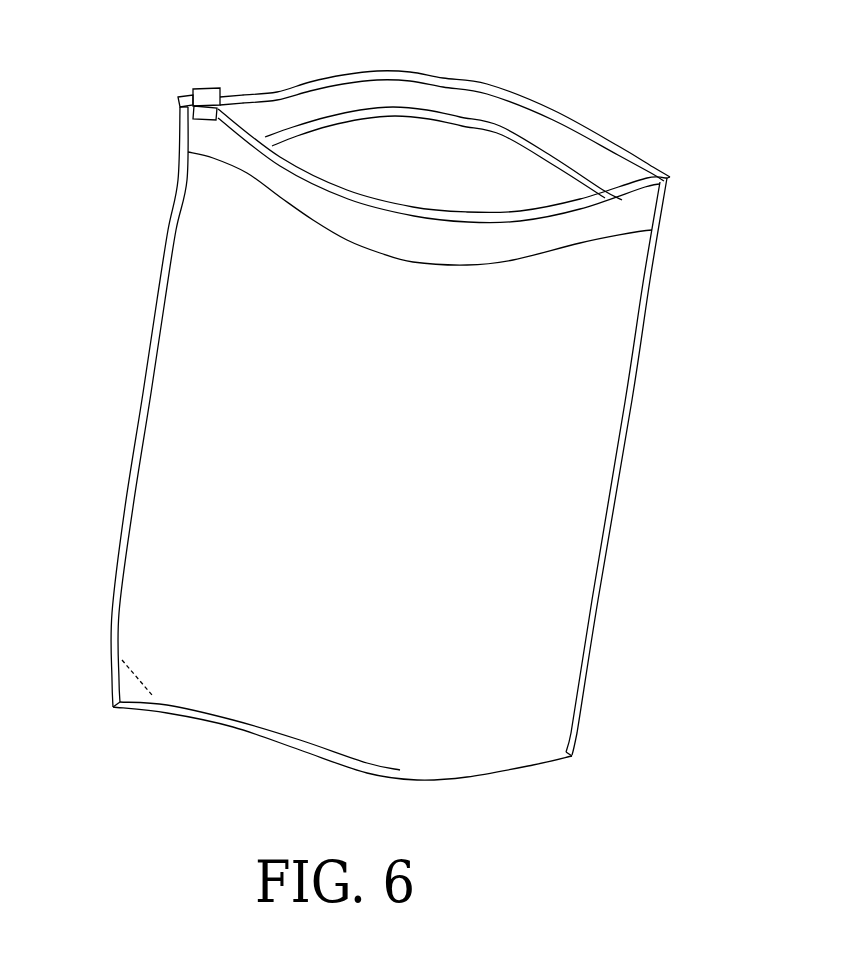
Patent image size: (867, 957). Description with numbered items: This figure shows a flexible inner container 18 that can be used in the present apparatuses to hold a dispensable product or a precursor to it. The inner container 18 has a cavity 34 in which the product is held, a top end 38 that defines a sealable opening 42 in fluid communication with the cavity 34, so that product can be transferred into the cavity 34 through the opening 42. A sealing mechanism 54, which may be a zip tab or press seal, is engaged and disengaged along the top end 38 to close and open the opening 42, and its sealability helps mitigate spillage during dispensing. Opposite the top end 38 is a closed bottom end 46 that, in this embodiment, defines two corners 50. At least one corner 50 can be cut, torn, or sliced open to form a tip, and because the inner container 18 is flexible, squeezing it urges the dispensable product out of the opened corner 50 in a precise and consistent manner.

The inner container 18 is at (633, 398).
The cavity 34 is at (425, 178).
The top end 38 is at (177, 183).
The sealable opening 42 is at (293, 110).
The closed bottom end 46 is at (257, 736).
The corner 50 is at (113, 680).
The sealing mechanism 54 is at (207, 88).